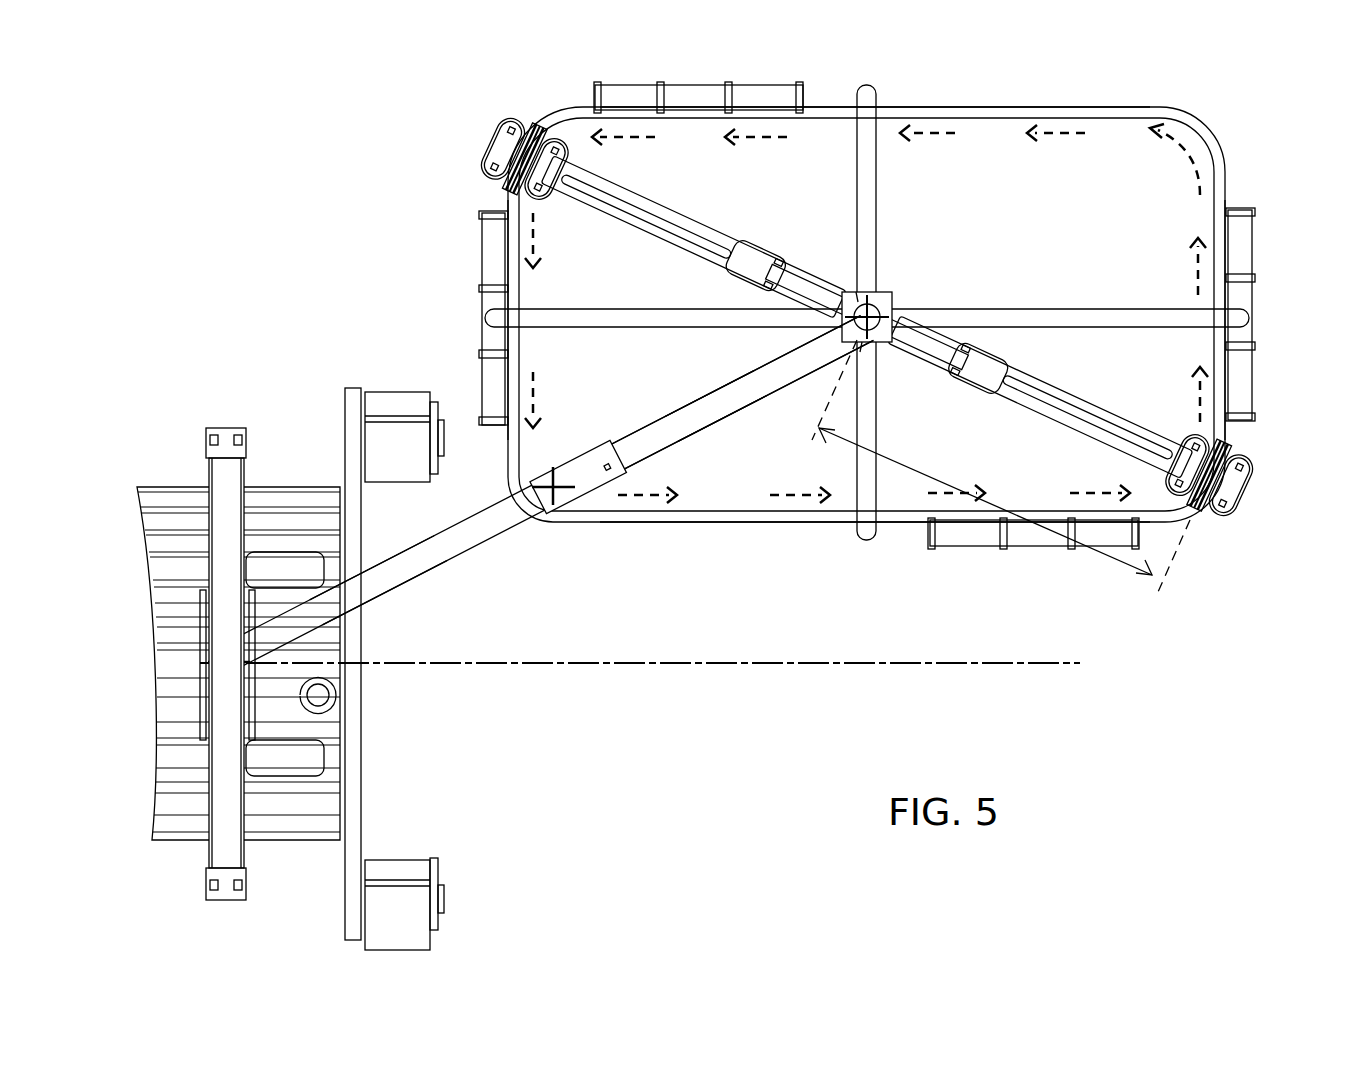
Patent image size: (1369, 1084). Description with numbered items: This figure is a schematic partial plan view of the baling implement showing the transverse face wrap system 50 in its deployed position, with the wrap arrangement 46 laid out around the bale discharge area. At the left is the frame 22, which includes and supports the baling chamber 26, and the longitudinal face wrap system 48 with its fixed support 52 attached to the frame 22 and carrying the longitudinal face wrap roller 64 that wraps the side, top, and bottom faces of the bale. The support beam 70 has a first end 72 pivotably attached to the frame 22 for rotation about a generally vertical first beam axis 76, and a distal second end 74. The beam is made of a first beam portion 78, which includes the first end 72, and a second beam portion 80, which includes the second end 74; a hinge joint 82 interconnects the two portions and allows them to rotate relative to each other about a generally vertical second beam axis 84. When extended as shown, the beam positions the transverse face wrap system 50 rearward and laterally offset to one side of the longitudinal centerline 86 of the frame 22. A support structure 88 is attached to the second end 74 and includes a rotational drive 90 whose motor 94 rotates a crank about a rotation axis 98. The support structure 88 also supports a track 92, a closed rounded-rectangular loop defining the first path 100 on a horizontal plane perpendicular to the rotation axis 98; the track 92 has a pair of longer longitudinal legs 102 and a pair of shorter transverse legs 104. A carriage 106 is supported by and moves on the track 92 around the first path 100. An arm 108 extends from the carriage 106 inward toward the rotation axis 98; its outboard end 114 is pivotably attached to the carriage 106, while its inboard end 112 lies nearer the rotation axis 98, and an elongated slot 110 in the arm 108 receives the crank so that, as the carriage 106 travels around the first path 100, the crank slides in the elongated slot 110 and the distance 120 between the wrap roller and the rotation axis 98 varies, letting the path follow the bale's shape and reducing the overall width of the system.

The frame 22 is at (172, 545).
The baling chamber 26 is at (225, 440).
The guide assembly 46 is at (410, 238).
The longitudinal face wrap system 48 is at (360, 947).
The transverse face wrap system 50 is at (900, 92).
The fixed support 52 is at (361, 803).
The longitudinal face wrap roller 64 is at (447, 897).
The support beam 70 is at (452, 570).
The first end 72 is at (205, 658).
The second end 74 is at (790, 336).
The first beam axis 76 is at (208, 682).
The first beam portion 78 is at (382, 583).
The second beam portion 80 is at (705, 412).
The hinge joint 82 is at (585, 495).
The second beam axis 84 is at (578, 460).
The longitudinal centerline 86 is at (1020, 666).
The support structure 88 is at (840, 92).
The rotational drive 90 is at (855, 292).
The track 92 is at (1185, 115).
The motor 94 is at (862, 344).
The rotation axis 98 is at (880, 298).
The first path 100 is at (770, 120).
The longitudinal legs 102 is at (1060, 108).
The transverse legs 104 is at (1215, 236).
The carriage 106 is at (490, 140).
The arm 108 is at (620, 192).
The elongated slot 110 is at (705, 240).
The inboard end 112 is at (1010, 367).
The outboard end 114 is at (495, 192).
The distance 120 is at (1098, 565).